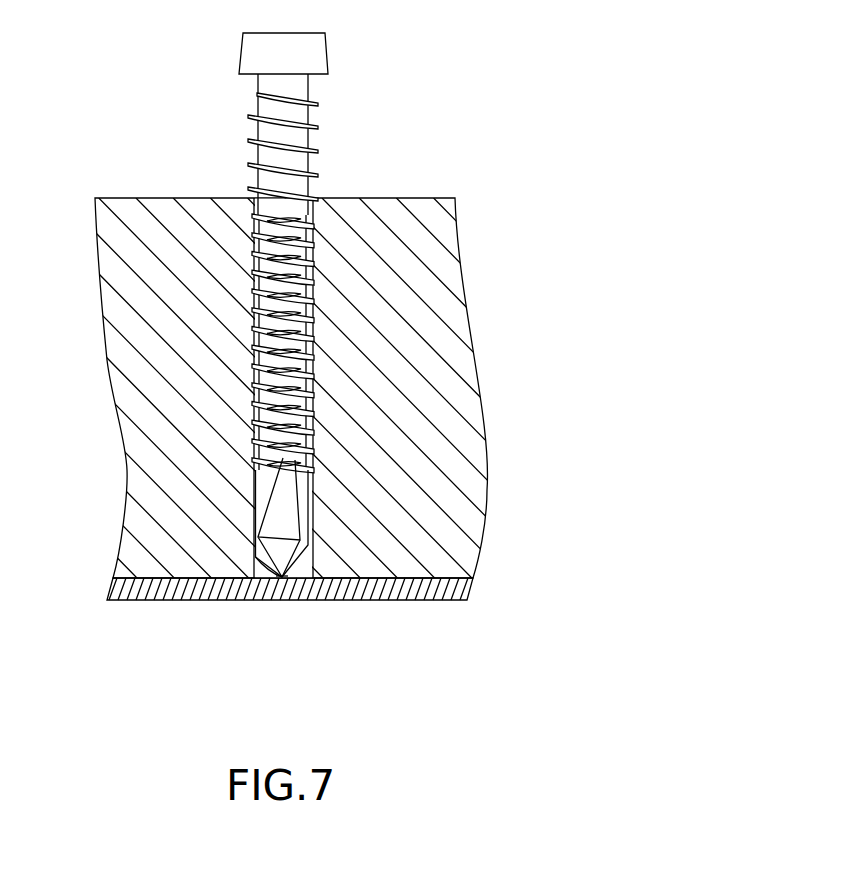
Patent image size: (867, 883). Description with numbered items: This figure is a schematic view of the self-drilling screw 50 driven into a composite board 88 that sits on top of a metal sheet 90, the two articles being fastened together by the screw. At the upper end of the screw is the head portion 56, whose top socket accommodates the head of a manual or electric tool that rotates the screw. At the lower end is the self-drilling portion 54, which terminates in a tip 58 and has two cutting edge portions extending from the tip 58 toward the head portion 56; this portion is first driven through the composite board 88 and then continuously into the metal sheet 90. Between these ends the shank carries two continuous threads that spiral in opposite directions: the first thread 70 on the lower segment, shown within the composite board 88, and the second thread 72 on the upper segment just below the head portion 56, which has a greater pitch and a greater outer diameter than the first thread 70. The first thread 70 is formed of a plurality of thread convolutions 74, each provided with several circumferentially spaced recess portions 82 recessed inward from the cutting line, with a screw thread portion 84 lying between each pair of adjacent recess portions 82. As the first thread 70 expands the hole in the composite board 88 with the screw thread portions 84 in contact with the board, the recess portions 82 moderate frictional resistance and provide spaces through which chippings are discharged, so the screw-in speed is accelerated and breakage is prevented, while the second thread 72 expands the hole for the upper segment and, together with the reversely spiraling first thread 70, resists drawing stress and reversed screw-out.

The self-drilling screw 50 is at (277, 358).
The head portion 56 is at (310, 51).
The second thread 72 is at (312, 118).
The first thread 70 is at (277, 343).
The thread convolutions 74 is at (254, 390).
The recess portions 82 is at (313, 308).
The screw thread portions 84 is at (313, 277).
The composite board 88 is at (445, 381).
The metal sheet 90 is at (328, 592).
The self-drilling portion 54 is at (210, 574).
The tip 58 is at (282, 578).